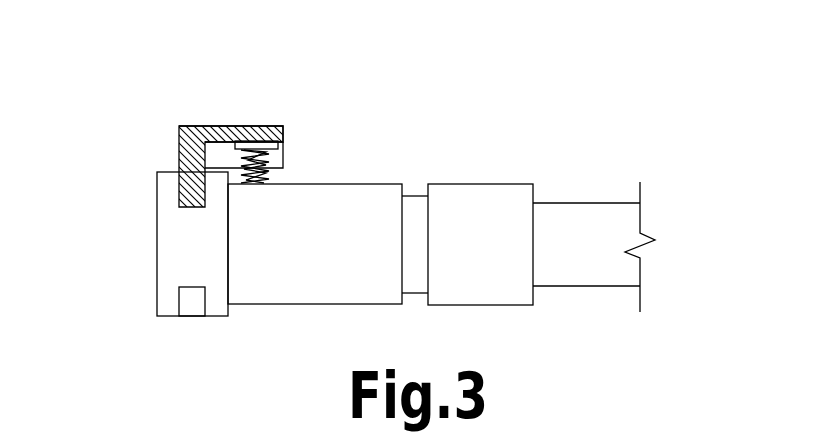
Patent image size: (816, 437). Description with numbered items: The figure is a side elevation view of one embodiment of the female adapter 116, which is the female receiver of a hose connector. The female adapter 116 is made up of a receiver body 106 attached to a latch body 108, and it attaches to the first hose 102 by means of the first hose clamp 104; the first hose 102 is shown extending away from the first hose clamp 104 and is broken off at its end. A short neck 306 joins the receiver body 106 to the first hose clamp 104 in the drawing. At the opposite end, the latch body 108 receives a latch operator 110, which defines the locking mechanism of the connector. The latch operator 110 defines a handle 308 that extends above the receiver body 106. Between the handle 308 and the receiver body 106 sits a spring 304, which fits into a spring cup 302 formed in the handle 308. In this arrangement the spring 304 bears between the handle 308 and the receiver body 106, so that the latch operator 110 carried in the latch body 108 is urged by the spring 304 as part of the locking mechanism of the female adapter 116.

The first hose 102 is at (585, 203).
The first hose clamp 104 is at (487, 184).
The receiver body 106 is at (272, 304).
The latch body 108 is at (157, 253).
The latch operator 110 is at (190, 127).
The female adapter 116 is at (543, 118).
The spring cup 302 is at (283, 147).
The spring 304 is at (283, 170).
The neck 306 is at (412, 293).
The handle 308 is at (227, 127).